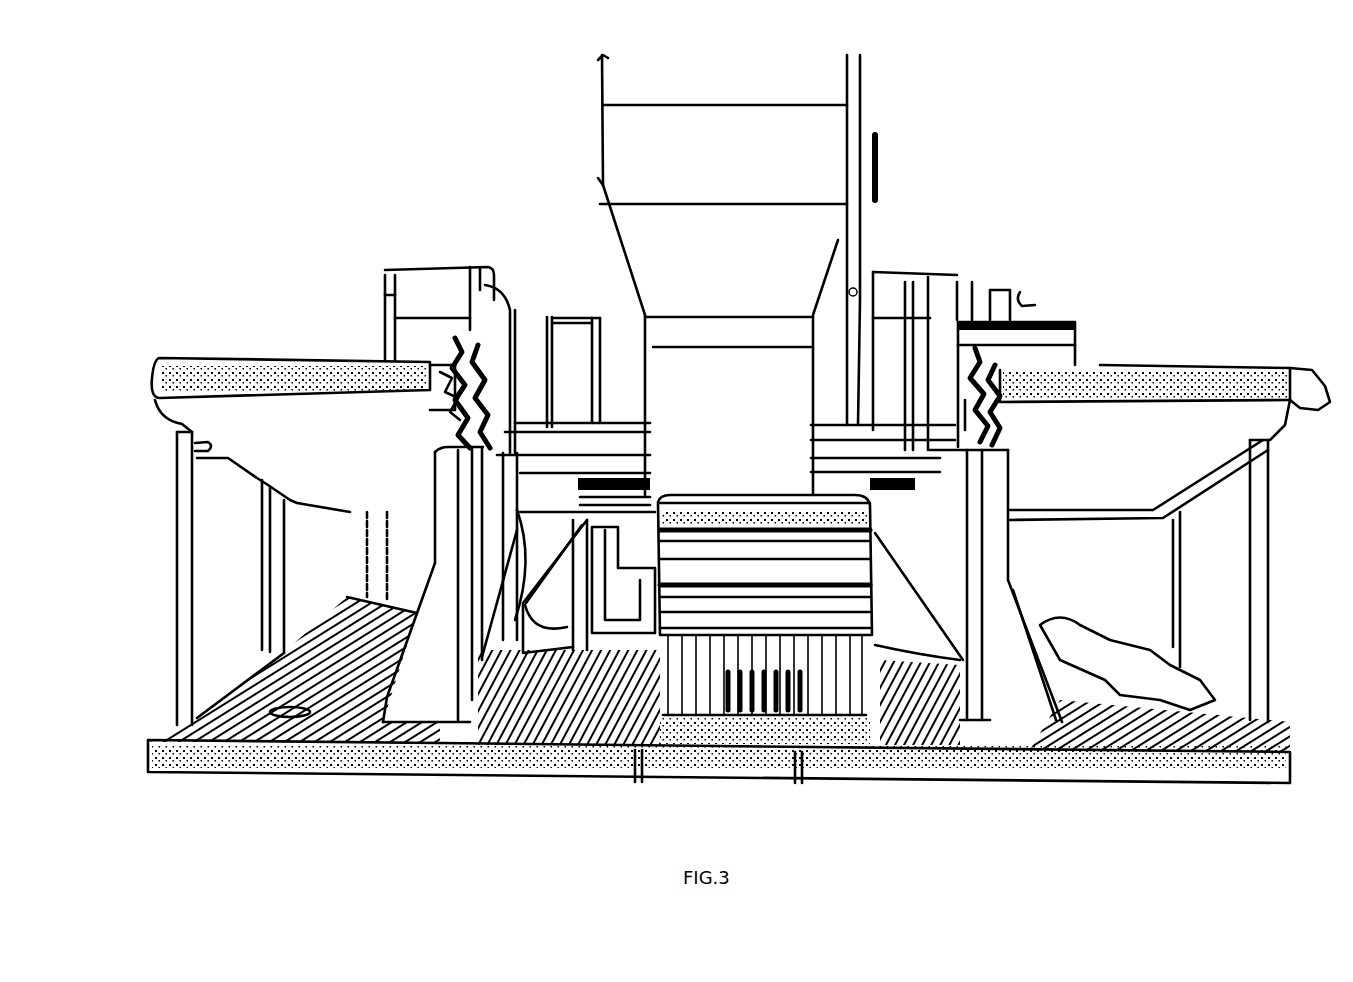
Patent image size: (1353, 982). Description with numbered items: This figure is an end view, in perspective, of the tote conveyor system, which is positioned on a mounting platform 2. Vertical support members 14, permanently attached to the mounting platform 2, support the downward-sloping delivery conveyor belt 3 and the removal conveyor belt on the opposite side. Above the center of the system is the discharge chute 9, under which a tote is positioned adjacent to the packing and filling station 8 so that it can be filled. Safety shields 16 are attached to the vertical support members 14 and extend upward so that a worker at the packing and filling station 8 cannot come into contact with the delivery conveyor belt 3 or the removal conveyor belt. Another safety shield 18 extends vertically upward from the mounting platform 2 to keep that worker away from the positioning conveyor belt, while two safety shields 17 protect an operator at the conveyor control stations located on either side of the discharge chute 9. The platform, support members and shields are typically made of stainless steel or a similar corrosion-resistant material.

The mounting platform 2 is at (240, 715).
The delivery conveyor belt 3 is at (195, 377).
The packing and filling station 8 is at (640, 672).
The discharge chute 9 is at (688, 243).
The vertical support members 14 is at (268, 560).
The safety shields 16 is at (498, 368).
The safety shields 17 is at (423, 342).
The safety shield 18 is at (787, 428).